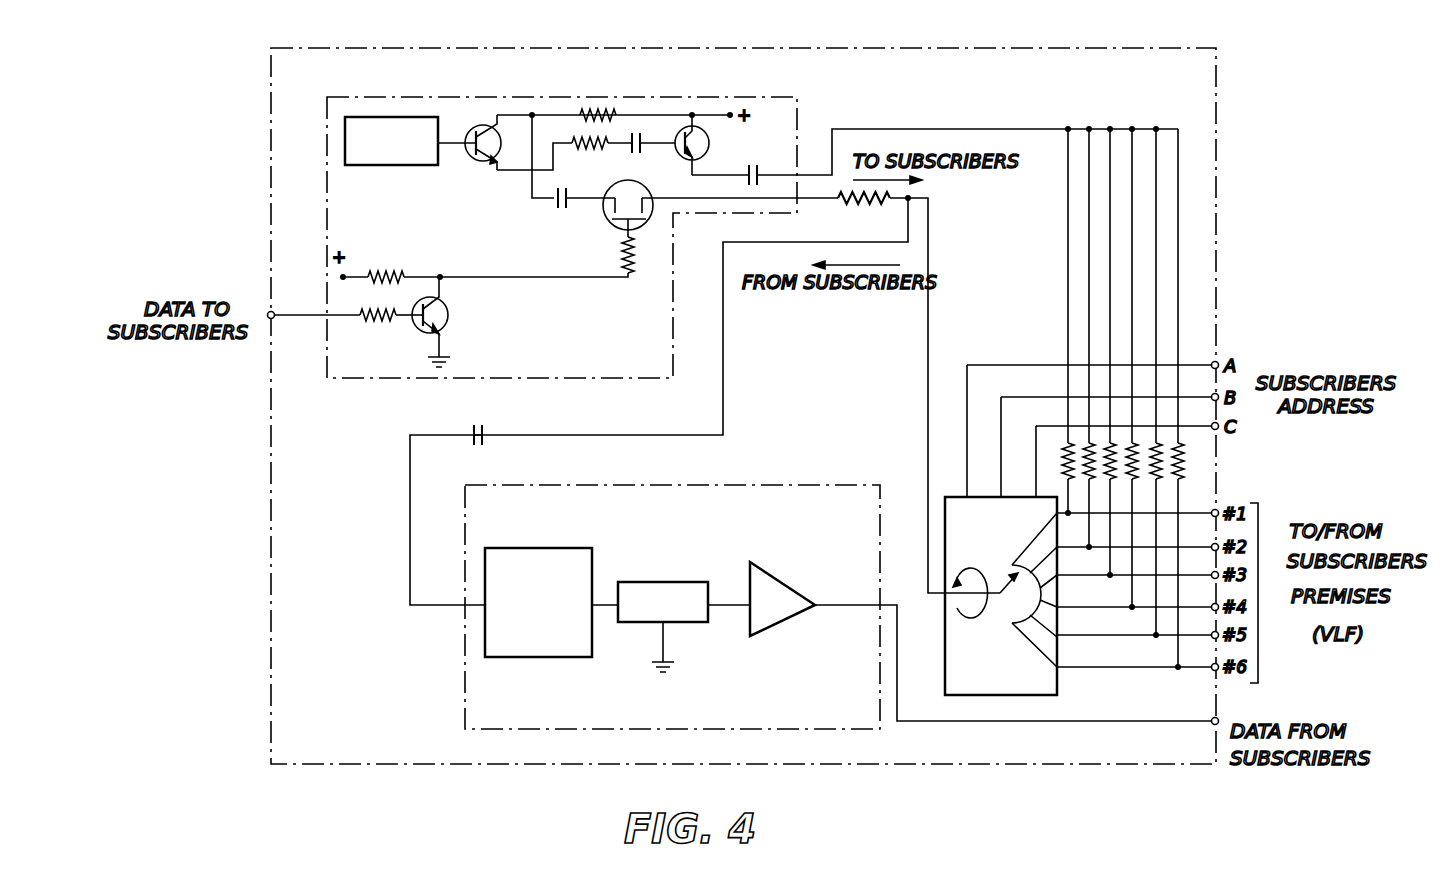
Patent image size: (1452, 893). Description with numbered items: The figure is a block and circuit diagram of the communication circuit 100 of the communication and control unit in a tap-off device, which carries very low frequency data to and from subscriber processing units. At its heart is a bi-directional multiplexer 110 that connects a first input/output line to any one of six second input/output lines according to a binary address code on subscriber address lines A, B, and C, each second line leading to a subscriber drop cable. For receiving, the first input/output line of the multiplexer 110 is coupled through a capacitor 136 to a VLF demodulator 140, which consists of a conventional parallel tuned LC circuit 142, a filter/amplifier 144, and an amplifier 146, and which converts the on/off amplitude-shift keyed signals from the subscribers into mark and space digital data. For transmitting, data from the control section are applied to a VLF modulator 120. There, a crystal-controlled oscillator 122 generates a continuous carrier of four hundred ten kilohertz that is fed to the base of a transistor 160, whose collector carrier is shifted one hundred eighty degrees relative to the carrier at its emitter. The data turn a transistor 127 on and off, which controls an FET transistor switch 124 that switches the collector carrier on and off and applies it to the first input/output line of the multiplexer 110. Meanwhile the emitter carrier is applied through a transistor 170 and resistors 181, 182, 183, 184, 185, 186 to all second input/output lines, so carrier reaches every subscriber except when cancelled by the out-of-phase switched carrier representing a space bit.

The communication circuit 100 is at (1139, 30).
The bi-directional multiplexer 110 is at (1047, 695).
The VLF modulator 120 is at (373, 378).
The crystal-controlled oscillator 122 is at (372, 165).
The FET transistor switch 124 is at (612, 222).
The transistor 127 is at (450, 315).
The capacitor 136 is at (475, 425).
The VLF demodulator 140 is at (806, 485).
The parallel tuned LC circuit 142 is at (567, 548).
The filter/amplifier 144 is at (693, 582).
The amplifier 146 is at (785, 579).
The transistor 160 is at (481, 162).
The transistor 170 is at (710, 148).
The resistor 181 is at (1067, 464).
The resistor 182 is at (1083, 454).
The resistor 183 is at (1104, 449).
The resistor 184 is at (1132, 464).
The resistor 185 is at (1154, 464).
The resistor 186 is at (1178, 455).